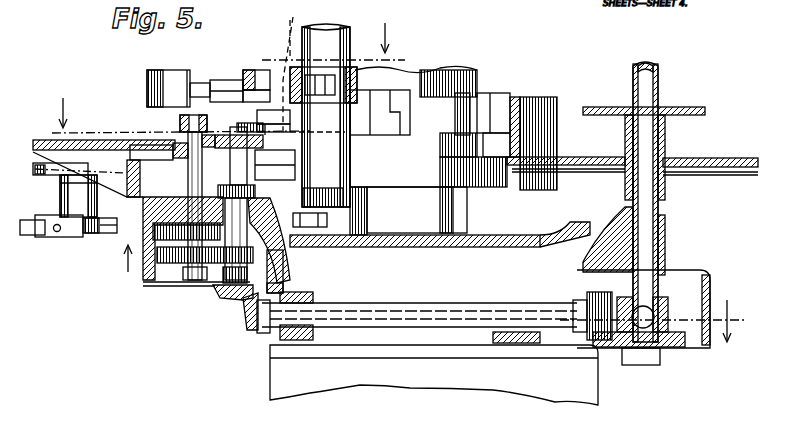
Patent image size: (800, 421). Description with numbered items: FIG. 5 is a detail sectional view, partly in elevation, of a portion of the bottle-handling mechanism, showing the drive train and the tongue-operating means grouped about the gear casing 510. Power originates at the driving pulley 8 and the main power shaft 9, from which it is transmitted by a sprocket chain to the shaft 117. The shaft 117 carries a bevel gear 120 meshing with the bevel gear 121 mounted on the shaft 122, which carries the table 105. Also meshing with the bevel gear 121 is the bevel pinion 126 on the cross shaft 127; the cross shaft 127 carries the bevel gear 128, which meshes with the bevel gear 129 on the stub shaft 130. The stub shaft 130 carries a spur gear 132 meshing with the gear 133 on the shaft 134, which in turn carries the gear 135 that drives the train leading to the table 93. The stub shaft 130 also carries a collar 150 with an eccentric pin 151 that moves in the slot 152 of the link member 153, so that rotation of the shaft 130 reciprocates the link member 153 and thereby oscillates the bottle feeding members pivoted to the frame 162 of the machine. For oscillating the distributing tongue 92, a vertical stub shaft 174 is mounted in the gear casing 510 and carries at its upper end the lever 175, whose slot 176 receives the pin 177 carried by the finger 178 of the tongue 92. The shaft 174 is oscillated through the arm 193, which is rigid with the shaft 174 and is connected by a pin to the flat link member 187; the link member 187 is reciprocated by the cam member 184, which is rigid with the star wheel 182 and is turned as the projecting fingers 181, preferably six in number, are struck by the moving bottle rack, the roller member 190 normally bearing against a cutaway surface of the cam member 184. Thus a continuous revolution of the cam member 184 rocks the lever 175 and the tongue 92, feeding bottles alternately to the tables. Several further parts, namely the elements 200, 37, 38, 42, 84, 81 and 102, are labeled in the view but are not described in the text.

The main power shaft 9 is at (225, 83).
The driving pulley 8 is at (439, 293).
The vertical stub shaft 174 is at (135, 142).
The arm 193 is at (78, 140).
The flat link member 187 is at (21, 113).
The roller member 190 is at (70, 168).
The cam member 184 is at (63, 199).
The projecting fingers 181 is at (30, 232).
The star wheel 182 is at (73, 233).
The distributing tongue 92 is at (163, 70).
The finger 178 is at (208, 88).
The lever 175 is at (221, 108).
The pin 177 is at (240, 108).
The slot 176 is at (264, 108).
The frame 162 is at (299, 68).
The column 200 is at (337, 48).
The link member 153 is at (297, 122).
The pin 151 is at (270, 122).
The slot 152 is at (205, 115).
The table 93 is at (185, 140).
The collar 150 is at (231, 150).
The stub shaft 130 is at (250, 186).
The gear 135 is at (145, 207).
The gear casing 510 is at (143, 237).
The gear 133 is at (173, 263).
The shaft 134 is at (205, 262).
The spur gear 132 is at (220, 274).
The bevel gear 129 is at (230, 300).
The bevel gear 128 is at (248, 328).
The cross shaft 127 is at (452, 315).
The bevel pinion 126 is at (590, 346).
The plate 37 is at (373, 232).
The block 38 is at (423, 178).
The housing 42 is at (458, 78).
The gear 84 is at (375, 100).
The bearing 81 is at (507, 100).
The table 105 is at (592, 157).
The arm 102 is at (727, 167).
The shaft 122 is at (648, 98).
The bevel gear 120 is at (660, 300).
The shaft 117 is at (630, 295).
The bevel gear 121 is at (670, 345).